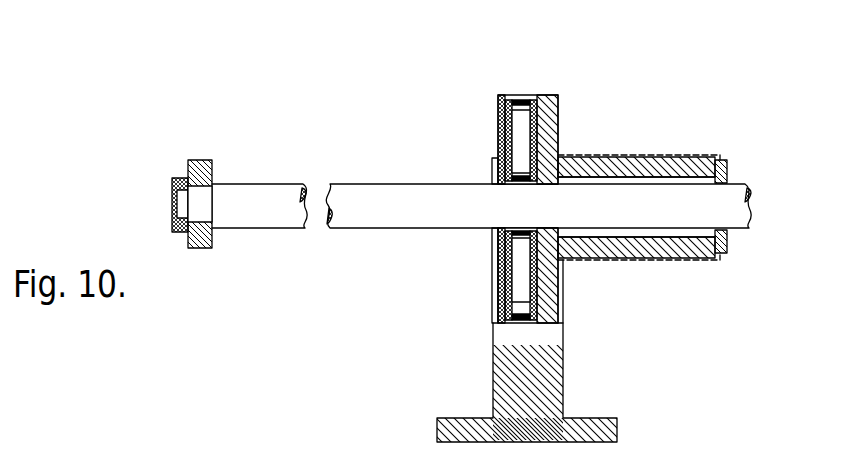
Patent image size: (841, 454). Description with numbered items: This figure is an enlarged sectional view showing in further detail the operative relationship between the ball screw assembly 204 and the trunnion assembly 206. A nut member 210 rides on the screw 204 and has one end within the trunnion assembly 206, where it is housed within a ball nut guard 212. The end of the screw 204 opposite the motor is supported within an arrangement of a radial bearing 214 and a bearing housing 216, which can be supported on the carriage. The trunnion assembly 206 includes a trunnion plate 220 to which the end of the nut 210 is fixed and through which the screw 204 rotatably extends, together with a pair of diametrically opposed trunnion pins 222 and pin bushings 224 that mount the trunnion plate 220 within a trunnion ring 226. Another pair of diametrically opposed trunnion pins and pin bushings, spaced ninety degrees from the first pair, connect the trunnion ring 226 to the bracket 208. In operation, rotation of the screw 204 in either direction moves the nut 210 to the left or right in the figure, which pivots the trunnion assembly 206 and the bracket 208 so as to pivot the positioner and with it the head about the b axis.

The ball screw assembly 204 is at (342, 228).
The trunnion assembly 206 is at (558, 95).
The bracket 208 is at (555, 378).
The nut member 210 is at (645, 160).
The ball nut guard 212 is at (675, 157).
The radial bearing 214 is at (190, 182).
The bearing housing 216 is at (200, 160).
The trunnion plate 220 is at (495, 165).
The trunnion pins 222 is at (518, 123).
The pin bushings 224 is at (520, 97).
The trunnion ring 226 is at (545, 128).